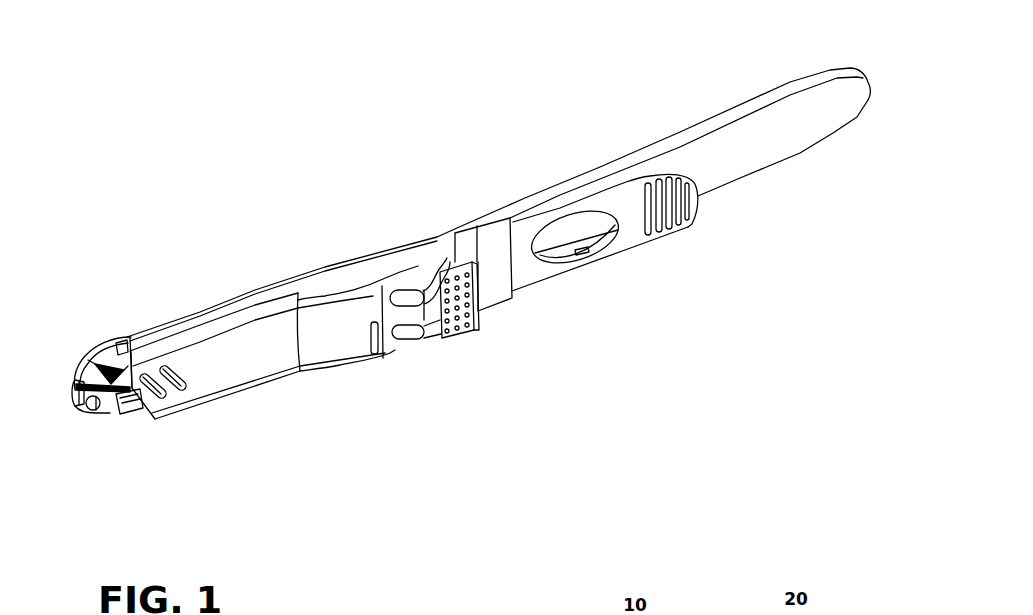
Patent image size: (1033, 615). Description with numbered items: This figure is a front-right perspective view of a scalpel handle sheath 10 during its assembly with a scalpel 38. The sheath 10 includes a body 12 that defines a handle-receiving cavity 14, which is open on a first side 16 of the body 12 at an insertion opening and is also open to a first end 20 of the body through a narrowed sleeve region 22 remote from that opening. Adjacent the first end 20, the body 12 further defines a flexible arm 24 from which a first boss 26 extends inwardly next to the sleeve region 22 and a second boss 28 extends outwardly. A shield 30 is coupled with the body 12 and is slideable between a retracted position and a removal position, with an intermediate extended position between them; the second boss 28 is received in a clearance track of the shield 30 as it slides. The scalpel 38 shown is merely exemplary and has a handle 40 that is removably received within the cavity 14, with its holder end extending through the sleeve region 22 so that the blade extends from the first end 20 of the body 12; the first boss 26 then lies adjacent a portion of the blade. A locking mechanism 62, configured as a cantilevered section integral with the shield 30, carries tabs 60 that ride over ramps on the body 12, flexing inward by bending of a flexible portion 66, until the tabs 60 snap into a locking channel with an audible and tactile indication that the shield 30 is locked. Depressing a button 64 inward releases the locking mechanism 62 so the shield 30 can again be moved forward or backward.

The scalpel handle sheath 10 is at (147, 294).
The body 12 is at (627, 228).
The handle-receiving cavity 14 is at (561, 256).
The first side 16 is at (475, 207).
The first end 20 is at (95, 357).
The narrowed sleeve region 22 is at (108, 374).
The flexible arm 24 is at (105, 405).
The first boss 26 is at (93, 410).
The second boss 28 is at (80, 387).
The shield 30 is at (270, 355).
The scalpel 38 is at (573, 138).
The handle 40 is at (737, 137).
The tabs 60 is at (460, 238).
The locking mechanism 62 is at (427, 350).
The button 64 is at (470, 320).
The flexible portion 66 is at (393, 296).